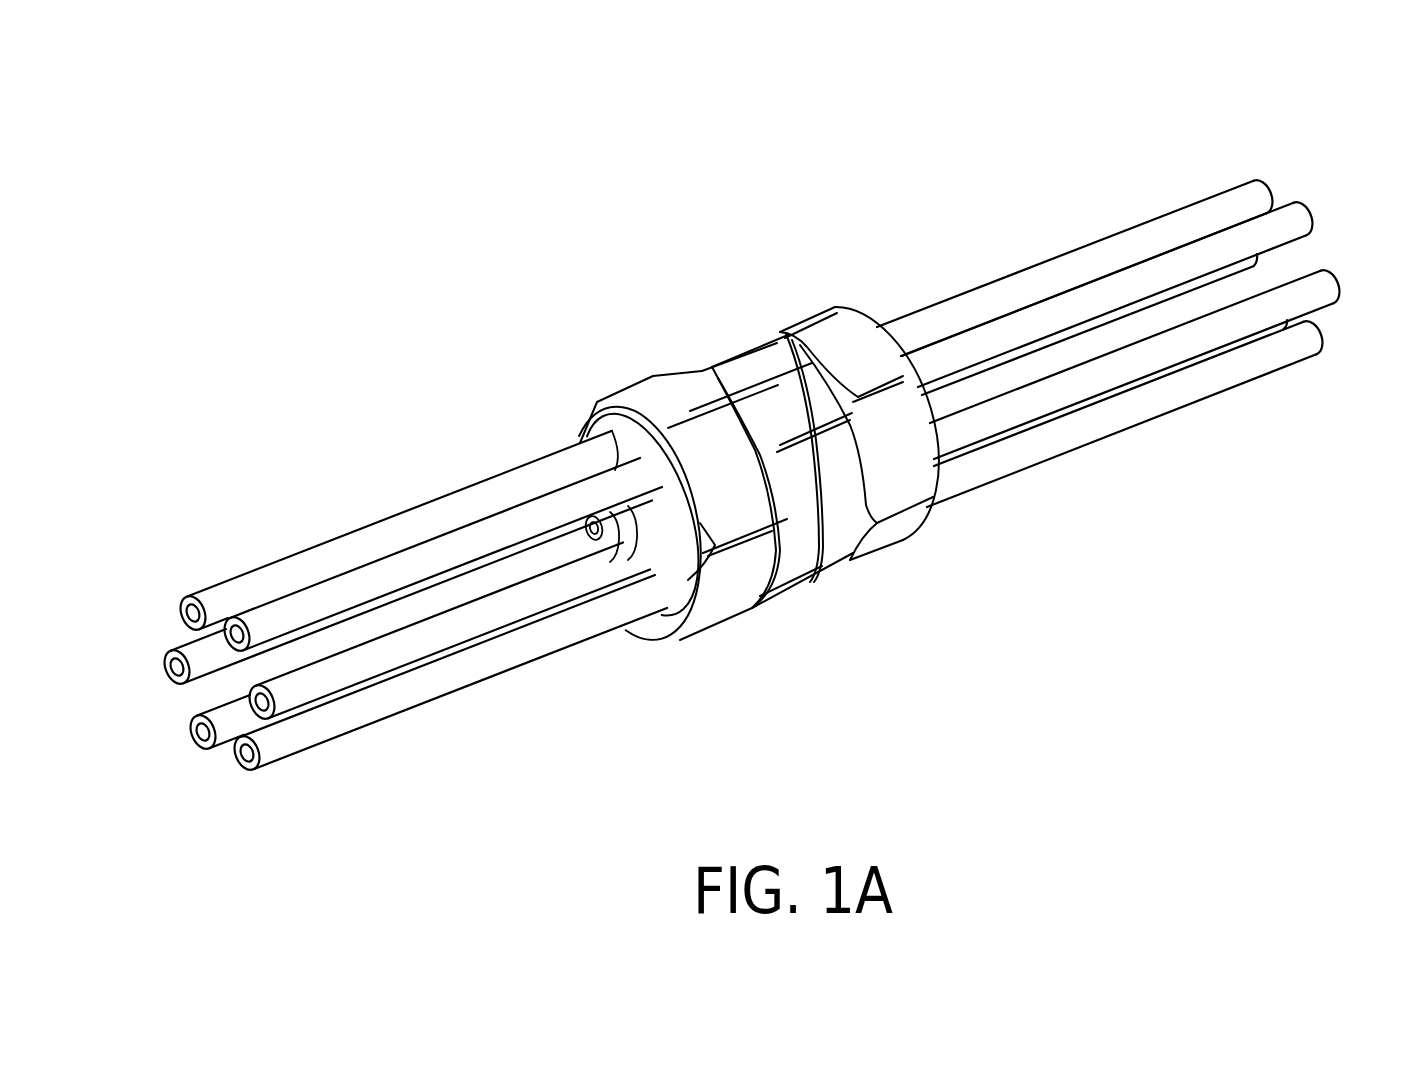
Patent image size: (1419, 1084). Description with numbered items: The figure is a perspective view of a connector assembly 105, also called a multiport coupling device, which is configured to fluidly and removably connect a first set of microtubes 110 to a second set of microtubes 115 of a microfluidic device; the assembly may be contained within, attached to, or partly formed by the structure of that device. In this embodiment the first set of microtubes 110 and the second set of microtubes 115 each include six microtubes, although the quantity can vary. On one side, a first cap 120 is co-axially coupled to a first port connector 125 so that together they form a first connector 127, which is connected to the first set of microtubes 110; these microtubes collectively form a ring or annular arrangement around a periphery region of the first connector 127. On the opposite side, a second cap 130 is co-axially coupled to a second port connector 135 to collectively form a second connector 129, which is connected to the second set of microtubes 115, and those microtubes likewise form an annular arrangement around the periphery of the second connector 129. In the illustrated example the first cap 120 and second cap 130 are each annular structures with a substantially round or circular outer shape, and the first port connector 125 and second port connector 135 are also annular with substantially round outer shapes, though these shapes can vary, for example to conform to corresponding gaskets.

The connector assembly 105 is at (447, 207).
The first set of microtubes 110 is at (333, 476).
The second set of microtubes 115 is at (1106, 185).
The first cap 120 is at (723, 608).
The first port connector 125 is at (797, 548).
The first connector 127 is at (555, 405).
The second connector 129 is at (732, 333).
The second cap 130 is at (900, 538).
The second port connector 135 is at (845, 532).